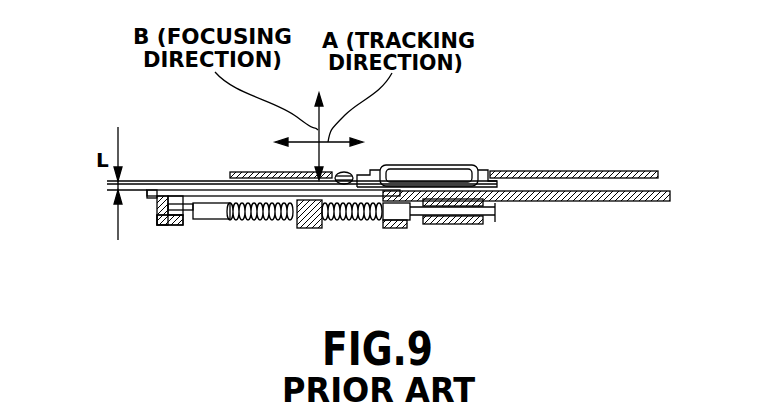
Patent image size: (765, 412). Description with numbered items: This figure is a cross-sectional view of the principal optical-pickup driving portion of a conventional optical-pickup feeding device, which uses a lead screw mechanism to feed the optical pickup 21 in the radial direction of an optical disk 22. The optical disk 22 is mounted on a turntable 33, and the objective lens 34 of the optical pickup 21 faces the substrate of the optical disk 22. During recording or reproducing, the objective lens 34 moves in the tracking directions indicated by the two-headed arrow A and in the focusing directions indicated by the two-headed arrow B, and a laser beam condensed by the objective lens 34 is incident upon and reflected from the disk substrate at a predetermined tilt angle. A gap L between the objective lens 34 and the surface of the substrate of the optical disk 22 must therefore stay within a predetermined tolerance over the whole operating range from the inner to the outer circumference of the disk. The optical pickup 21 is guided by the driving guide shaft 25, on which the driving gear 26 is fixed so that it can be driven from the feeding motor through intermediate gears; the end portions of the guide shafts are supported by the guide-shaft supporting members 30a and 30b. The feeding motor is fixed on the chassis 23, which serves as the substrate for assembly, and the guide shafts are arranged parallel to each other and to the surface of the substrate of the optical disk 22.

The optical pickup 21 is at (314, 229).
The optical disk 22 is at (243, 171).
The chassis 23 is at (165, 190).
The driving guide shaft 25 is at (207, 219).
The driving gear 26 is at (470, 224).
The guide-shaft supporting member 30a is at (167, 225).
The guide-shaft supporting member 30b is at (430, 225).
The turntable 33 is at (446, 184).
The objective lens 34 is at (356, 176).